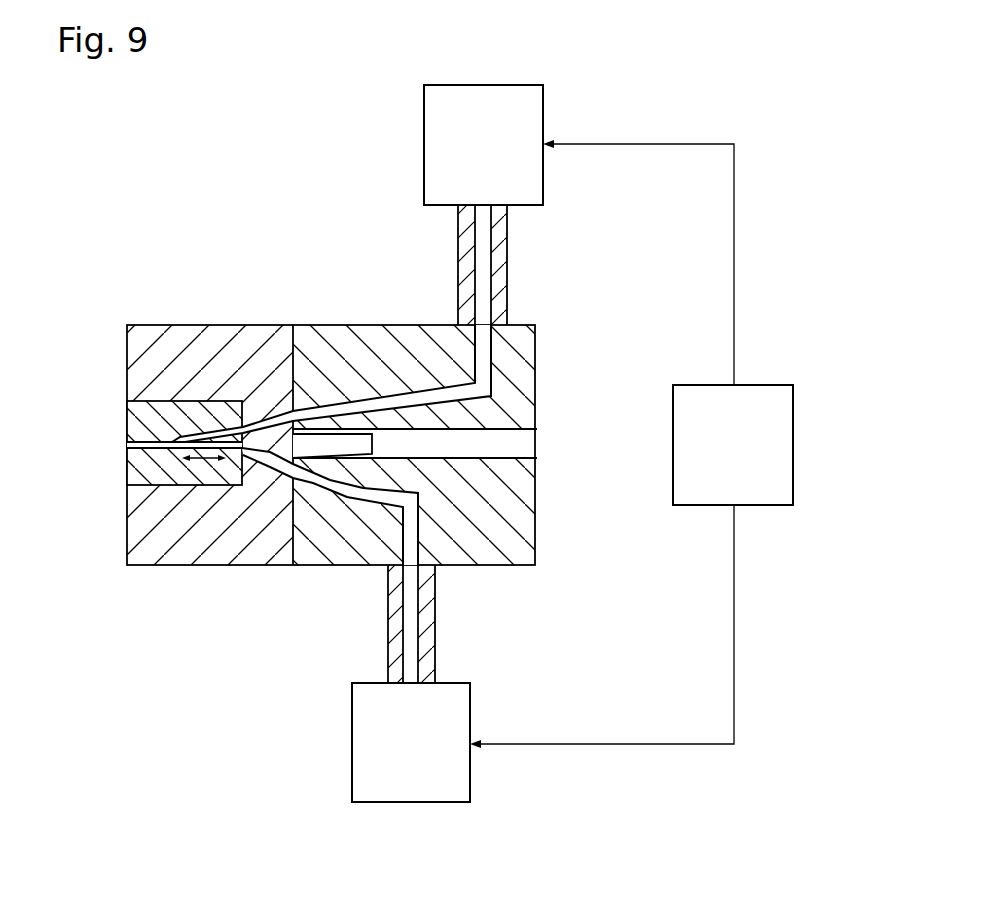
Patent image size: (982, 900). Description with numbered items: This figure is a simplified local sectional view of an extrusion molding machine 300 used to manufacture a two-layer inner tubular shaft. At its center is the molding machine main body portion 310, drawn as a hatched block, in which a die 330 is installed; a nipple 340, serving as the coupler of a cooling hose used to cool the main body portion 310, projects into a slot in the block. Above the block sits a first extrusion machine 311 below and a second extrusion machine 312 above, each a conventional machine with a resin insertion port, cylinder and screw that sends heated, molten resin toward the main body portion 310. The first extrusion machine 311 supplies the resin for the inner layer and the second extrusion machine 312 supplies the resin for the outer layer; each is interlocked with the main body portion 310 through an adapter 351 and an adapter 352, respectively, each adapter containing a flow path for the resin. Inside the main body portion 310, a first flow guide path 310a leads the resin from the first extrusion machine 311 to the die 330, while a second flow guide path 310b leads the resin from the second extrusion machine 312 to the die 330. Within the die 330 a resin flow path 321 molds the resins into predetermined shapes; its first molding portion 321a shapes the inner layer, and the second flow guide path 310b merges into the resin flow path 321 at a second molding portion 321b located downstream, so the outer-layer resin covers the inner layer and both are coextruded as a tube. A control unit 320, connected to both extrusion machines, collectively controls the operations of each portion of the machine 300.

The extrusion molding machine 300 is at (223, 112).
The molding machine main body portion 310 is at (552, 317).
The first flow guide path 310a is at (351, 491).
The second flow guide path 310b is at (397, 396).
The first extrusion machine 311 is at (420, 802).
The second extrusion machine 312 is at (491, 85).
The control unit 320 is at (793, 424).
The resin flow path 321 is at (153, 432).
The first molding portion 321a is at (239, 449).
The second molding portion 321b is at (142, 450).
The die 330 is at (210, 485).
The nipple 340 is at (353, 437).
The adapter 351 is at (437, 625).
The adapter 352 is at (508, 248).